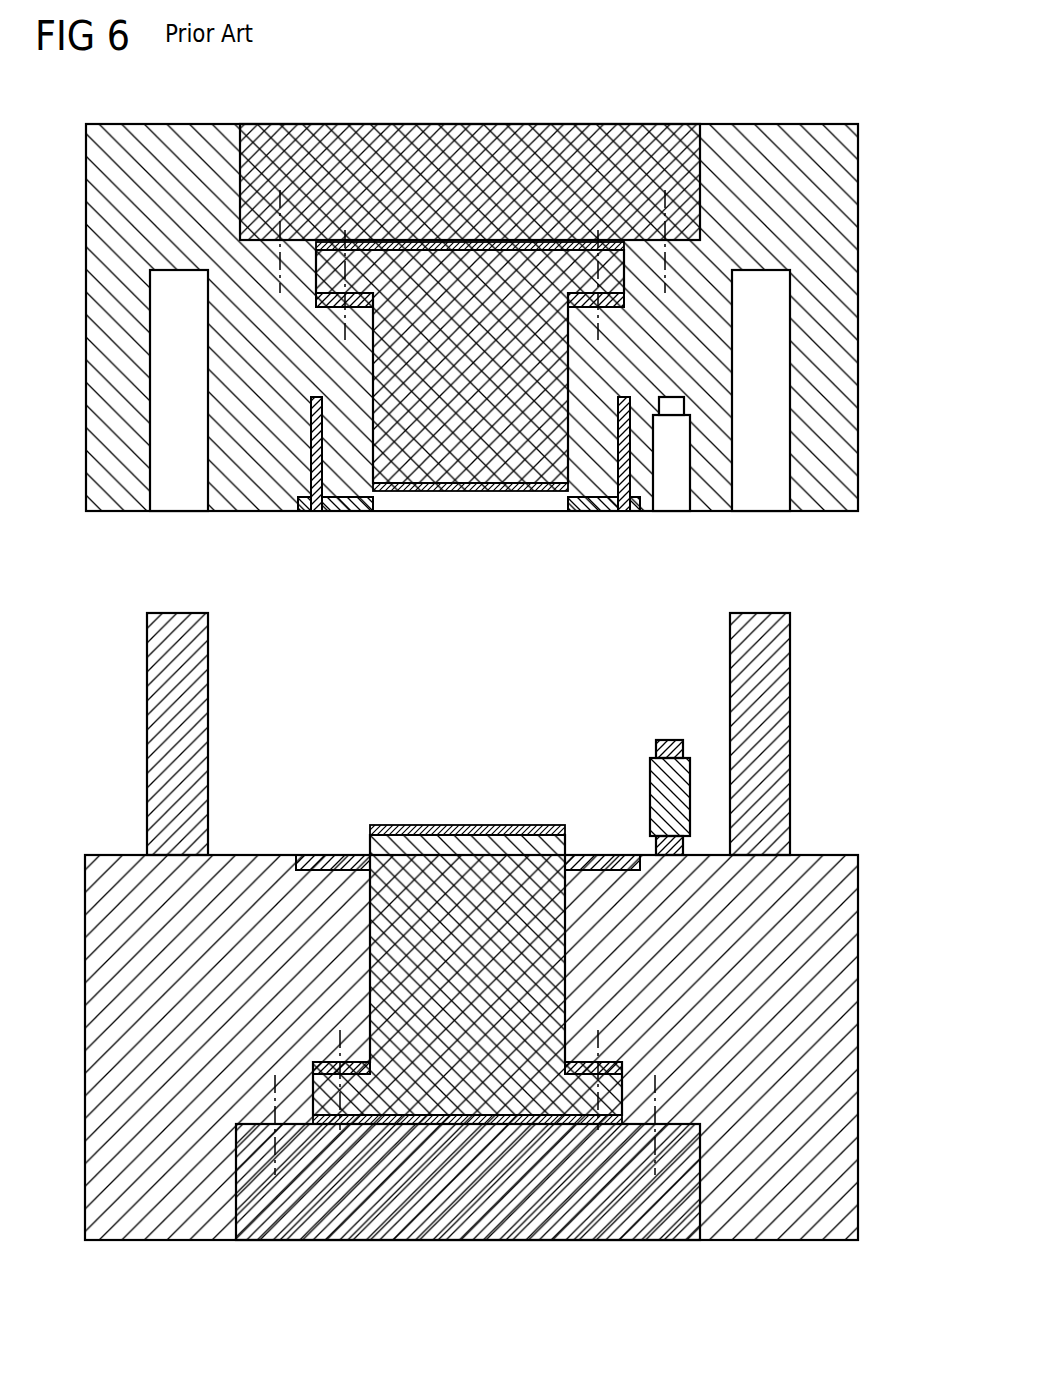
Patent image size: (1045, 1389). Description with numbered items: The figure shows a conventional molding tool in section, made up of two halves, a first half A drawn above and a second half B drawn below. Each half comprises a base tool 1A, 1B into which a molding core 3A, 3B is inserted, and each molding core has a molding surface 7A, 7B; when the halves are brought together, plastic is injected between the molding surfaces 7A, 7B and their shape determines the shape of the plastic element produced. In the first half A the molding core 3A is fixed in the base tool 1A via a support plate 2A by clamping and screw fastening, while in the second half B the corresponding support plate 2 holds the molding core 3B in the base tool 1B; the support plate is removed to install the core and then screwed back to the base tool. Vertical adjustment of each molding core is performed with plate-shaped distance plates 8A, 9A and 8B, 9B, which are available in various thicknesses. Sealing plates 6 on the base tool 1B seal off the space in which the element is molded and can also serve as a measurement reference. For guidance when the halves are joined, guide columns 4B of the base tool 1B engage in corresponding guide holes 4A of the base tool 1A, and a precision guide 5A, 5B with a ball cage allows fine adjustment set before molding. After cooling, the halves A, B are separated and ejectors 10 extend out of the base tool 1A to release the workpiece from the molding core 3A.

The first half A is at (885, 125).
The second half B is at (875, 675).
The base tool 1A is at (840, 187).
The support plate 2A is at (570, 124).
The molding core 3A is at (373, 361).
The guide holes 4A is at (158, 405).
The precision guide 5A is at (672, 503).
The molding surface 7A is at (470, 465).
The distance plate 8A is at (624, 302).
The distance plate 9A is at (511, 242).
The ejectors 10 is at (311, 440).
The base tool 1B is at (845, 887).
The support plate 2 is at (568, 1240).
The molding core 3B is at (368, 1030).
The guide columns 4B is at (156, 768).
The precision guide 5B is at (667, 740).
The sealing plates 6 is at (328, 860).
The molding surface 7B is at (468, 840).
The distance plate 8B is at (612, 1063).
The distance plate 9B is at (505, 1118).